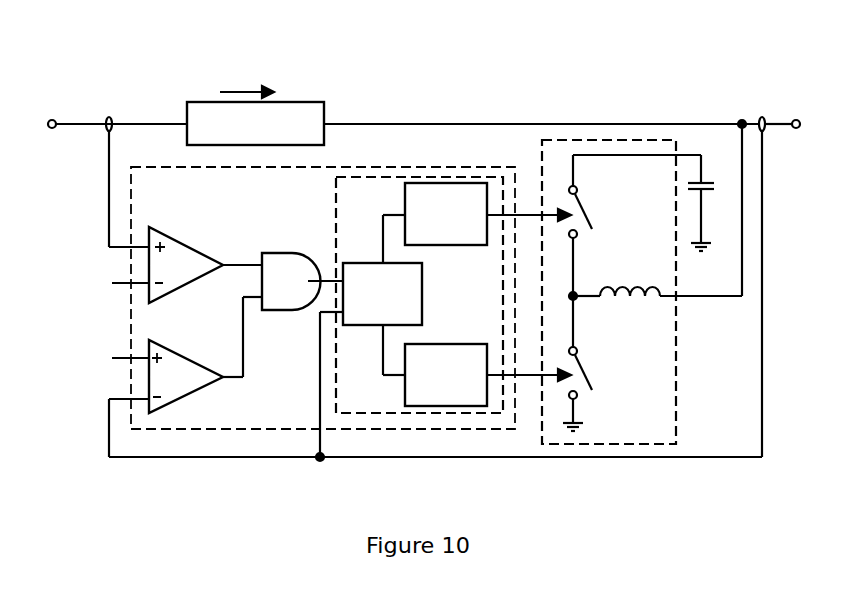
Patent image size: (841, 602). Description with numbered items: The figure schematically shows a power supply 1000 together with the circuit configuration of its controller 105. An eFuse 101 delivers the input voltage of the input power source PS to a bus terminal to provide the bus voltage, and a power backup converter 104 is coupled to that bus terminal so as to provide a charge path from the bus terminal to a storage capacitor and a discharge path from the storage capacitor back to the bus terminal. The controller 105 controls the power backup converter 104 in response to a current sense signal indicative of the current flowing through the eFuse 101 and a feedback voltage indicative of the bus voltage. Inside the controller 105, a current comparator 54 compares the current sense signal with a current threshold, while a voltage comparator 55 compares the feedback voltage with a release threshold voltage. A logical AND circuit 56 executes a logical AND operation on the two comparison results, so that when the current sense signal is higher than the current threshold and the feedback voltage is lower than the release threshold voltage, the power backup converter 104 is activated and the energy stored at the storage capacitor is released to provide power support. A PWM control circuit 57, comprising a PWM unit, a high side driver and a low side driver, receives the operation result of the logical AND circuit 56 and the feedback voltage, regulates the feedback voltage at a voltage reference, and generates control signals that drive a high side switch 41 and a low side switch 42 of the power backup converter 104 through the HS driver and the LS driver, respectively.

The power supply 1000 is at (126, 72).
The eFuse 101 is at (255, 123).
The controller 105 is at (190, 207).
The current comparator 54 is at (186, 265).
The voltage comparator 55 is at (186, 376).
The logical AND circuit 56 is at (291, 281).
The PWM control circuit 57 is at (372, 210).
The power backup converter 104 is at (663, 434).
The high side switch 41 is at (592, 212).
The low side switch 42 is at (590, 389).